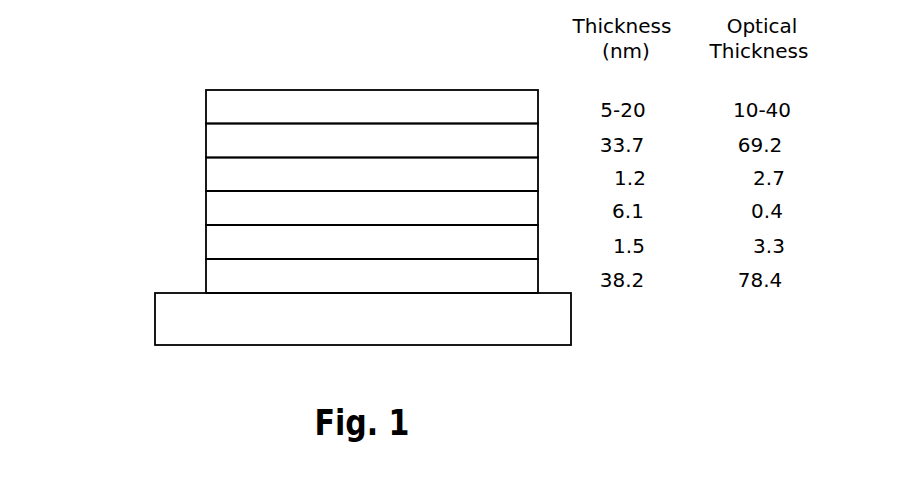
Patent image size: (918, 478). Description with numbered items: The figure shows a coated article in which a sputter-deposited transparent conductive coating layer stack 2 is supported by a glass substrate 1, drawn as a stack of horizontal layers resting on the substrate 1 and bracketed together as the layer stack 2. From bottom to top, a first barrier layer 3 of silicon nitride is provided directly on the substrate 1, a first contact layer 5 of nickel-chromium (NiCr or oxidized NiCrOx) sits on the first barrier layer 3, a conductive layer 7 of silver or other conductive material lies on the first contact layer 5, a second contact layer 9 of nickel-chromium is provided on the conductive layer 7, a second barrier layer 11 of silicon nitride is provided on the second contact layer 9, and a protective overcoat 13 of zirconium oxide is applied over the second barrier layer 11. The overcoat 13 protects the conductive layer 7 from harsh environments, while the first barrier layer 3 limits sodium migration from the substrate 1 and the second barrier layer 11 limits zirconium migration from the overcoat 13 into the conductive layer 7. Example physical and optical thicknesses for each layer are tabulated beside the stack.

The substrate 1 is at (155, 318).
The layer stack 2 is at (70, 290).
The first barrier layer 3 is at (206, 276).
The first contact layer 5 is at (206, 242).
The conductive layer 7 is at (206, 208).
The second contact layer 9 is at (206, 174).
The second barrier layer 11 is at (206, 140).
The protective overcoat 13 is at (206, 106).